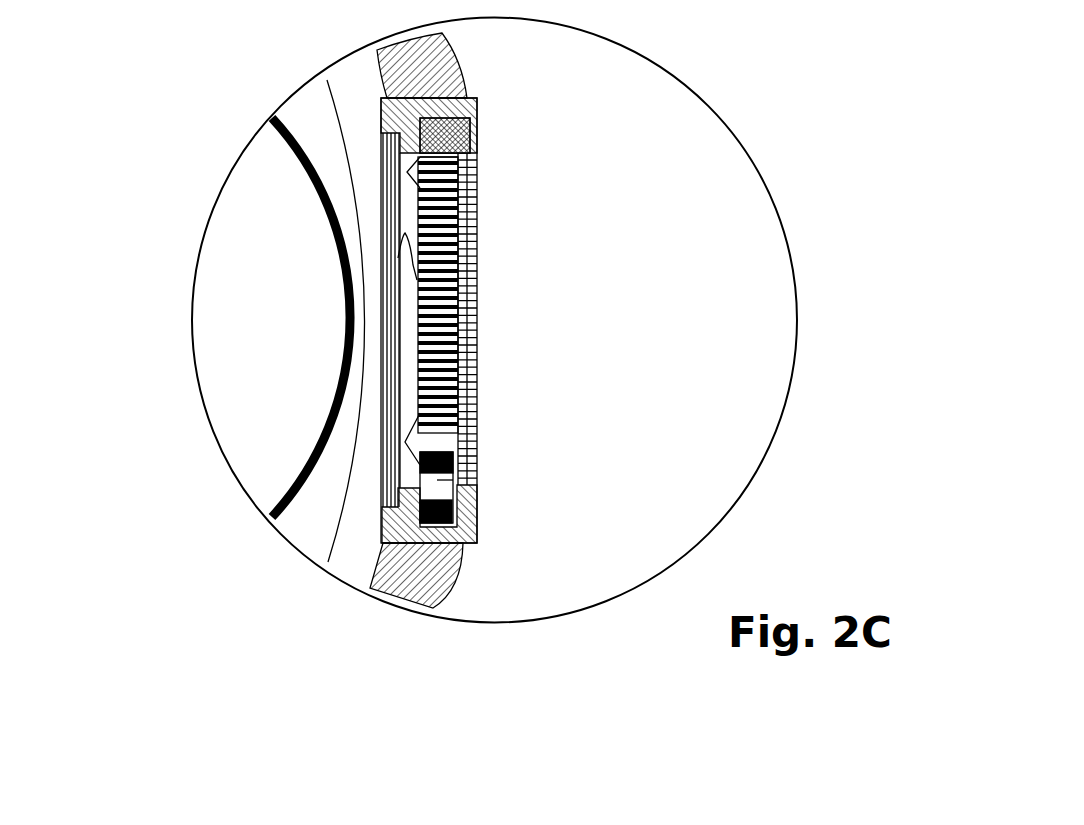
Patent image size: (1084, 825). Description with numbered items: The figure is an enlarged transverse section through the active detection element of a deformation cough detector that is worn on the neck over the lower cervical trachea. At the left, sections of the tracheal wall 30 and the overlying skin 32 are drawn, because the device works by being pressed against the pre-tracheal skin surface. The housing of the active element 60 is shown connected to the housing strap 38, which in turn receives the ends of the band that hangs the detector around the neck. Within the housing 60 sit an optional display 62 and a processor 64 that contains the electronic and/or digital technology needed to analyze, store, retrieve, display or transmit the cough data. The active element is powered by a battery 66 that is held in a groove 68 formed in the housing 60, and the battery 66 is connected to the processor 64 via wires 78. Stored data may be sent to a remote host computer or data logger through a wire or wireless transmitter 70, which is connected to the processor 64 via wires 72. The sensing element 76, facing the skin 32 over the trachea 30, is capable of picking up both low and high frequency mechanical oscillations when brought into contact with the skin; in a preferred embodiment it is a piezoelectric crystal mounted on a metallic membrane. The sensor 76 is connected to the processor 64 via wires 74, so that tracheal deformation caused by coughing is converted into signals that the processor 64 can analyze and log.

The tracheal wall 30 is at (327, 430).
The skin 32 is at (350, 505).
The housing strap 38 is at (460, 580).
The housing of the active element 60 is at (477, 118).
The display 62 is at (477, 245).
The processor 64 is at (477, 340).
The battery 66 is at (477, 471).
The groove 68 is at (477, 527).
The transmitter 70 is at (388, 128).
The wires 72 is at (393, 183).
The wires 74 is at (398, 257).
The sensing element 76 is at (380, 340).
The wires 78 is at (405, 442).